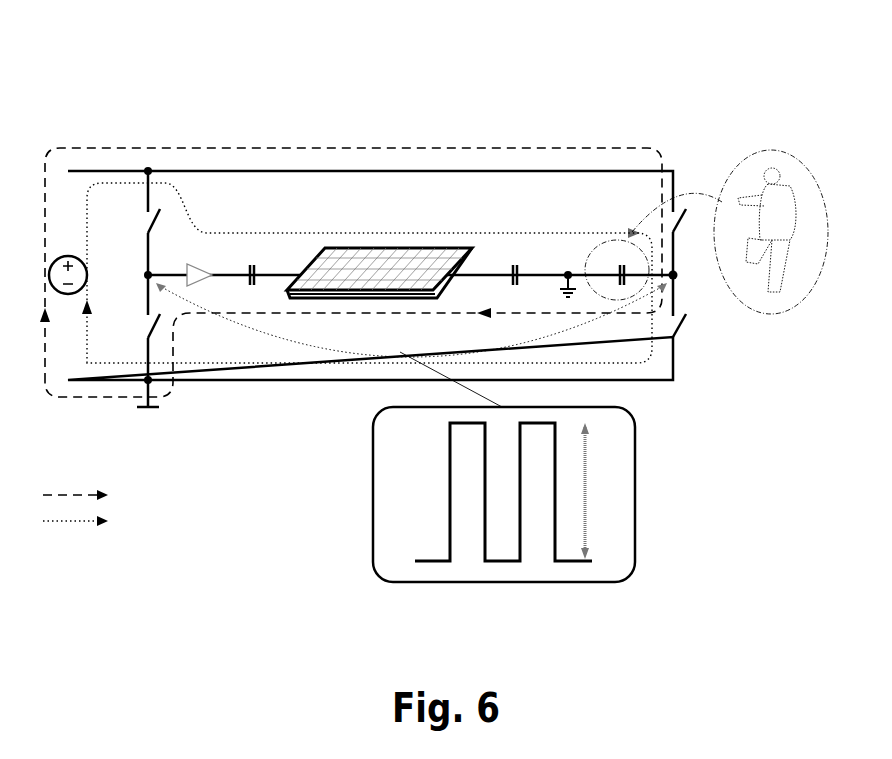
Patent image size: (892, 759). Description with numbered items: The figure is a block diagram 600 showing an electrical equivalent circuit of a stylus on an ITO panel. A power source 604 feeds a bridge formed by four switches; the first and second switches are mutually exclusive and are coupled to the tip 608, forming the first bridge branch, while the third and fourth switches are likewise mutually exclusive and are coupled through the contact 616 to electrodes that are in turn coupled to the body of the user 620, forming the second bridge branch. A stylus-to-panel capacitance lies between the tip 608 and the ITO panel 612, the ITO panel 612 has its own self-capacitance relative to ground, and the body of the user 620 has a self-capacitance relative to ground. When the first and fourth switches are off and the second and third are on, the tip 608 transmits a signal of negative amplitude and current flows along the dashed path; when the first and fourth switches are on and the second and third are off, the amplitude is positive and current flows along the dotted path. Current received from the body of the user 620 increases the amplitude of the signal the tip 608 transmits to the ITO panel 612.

The block diagram 600 is at (420, 126).
The power source 604 is at (80, 257).
The tip 608 is at (202, 267).
The ITO panel 612 is at (358, 248).
The contact 616 is at (673, 275).
The user 620 is at (785, 182).